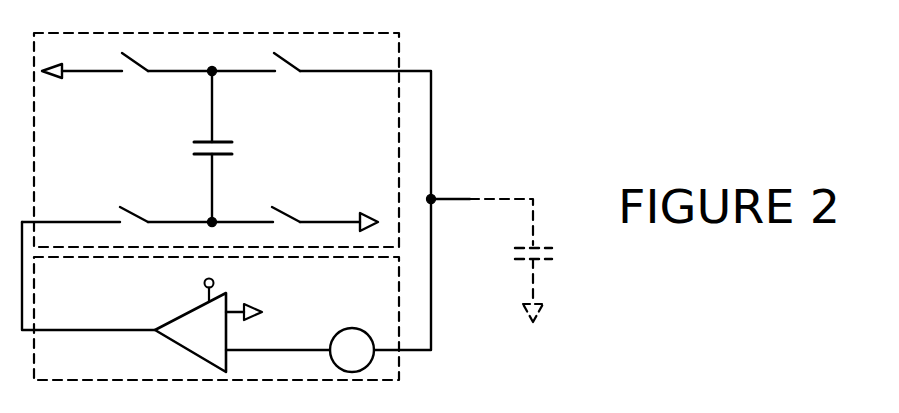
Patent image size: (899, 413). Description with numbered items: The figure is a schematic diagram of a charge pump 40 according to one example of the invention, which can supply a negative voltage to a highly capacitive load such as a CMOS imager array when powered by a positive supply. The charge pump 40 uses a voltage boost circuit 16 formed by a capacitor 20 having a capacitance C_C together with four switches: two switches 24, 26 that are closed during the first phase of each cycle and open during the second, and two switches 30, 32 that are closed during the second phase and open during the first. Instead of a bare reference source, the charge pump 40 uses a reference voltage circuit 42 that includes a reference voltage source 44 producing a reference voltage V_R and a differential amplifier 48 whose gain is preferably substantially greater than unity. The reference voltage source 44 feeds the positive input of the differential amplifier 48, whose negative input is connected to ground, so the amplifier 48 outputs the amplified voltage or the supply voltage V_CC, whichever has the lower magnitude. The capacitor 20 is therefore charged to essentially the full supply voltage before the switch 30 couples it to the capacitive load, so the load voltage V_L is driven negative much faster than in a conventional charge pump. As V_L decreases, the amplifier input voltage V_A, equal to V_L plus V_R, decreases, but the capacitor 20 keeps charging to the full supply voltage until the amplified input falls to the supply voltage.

The voltage boost circuit 16 is at (400, 45).
The capacitor 20 is at (232, 158).
The switch 24 is at (147, 74).
The switch 26 is at (120, 205).
The switch 30 is at (297, 74).
The switch 32 is at (316, 217).
The charge pump 40 is at (483, 106).
The reference voltage circuit 42 is at (400, 361).
The reference voltage source 44 is at (347, 329).
The differential amplifier 48 is at (172, 316).